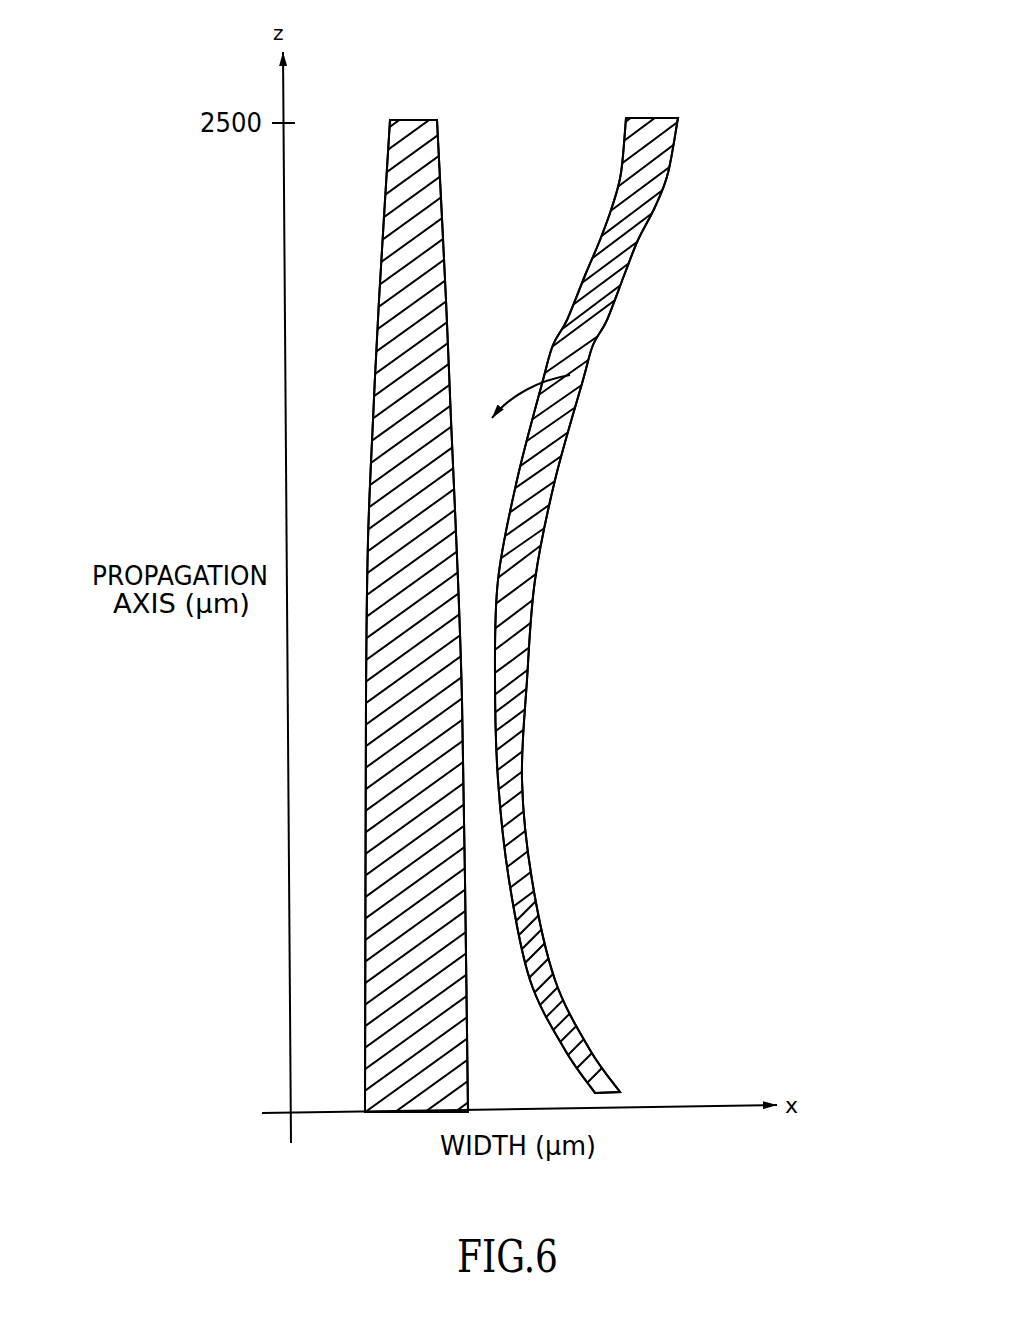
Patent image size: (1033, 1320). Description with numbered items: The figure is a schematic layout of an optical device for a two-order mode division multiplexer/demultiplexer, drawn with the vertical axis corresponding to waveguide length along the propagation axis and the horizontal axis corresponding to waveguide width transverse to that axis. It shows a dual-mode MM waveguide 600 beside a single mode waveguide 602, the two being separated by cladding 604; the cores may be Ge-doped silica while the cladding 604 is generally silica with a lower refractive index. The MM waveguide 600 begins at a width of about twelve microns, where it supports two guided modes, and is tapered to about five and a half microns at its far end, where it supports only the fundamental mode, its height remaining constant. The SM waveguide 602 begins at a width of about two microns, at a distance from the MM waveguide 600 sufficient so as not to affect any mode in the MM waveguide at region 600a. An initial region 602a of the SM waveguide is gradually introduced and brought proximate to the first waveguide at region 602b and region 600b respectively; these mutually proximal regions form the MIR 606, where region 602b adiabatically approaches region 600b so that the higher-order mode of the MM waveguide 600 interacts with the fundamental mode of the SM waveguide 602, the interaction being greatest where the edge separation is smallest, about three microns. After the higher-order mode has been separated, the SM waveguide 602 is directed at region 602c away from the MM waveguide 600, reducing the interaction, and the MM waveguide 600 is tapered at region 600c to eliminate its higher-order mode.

The dual-mode MM waveguide 600 is at (407, 137).
The region of MM waveguide 600a is at (440, 1022).
The region of MM waveguide 600b is at (430, 655).
The region of MM waveguide 600c is at (420, 230).
The single mode waveguide 602 is at (652, 133).
The initial region of SM waveguide 602a is at (555, 1015).
The region of SM waveguide 602b is at (517, 650).
The region of SM waveguide 602c is at (623, 233).
The cladding 604 is at (530, 177).
The MIR 606 is at (570, 375).